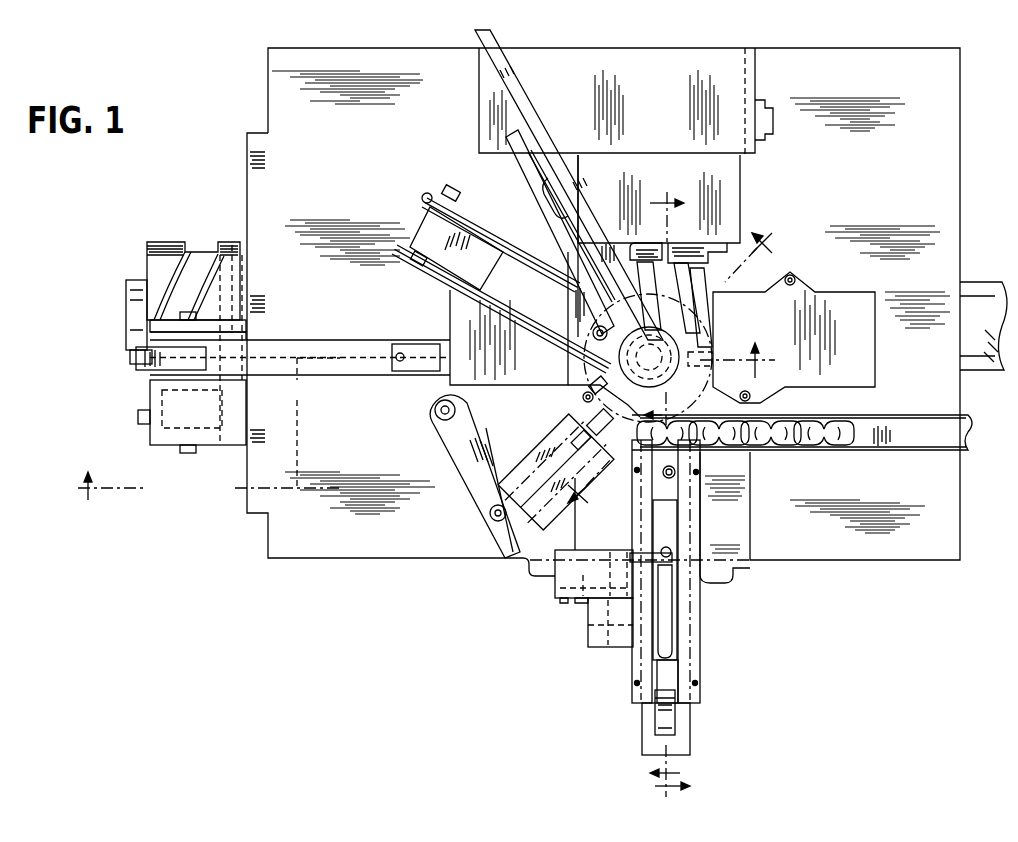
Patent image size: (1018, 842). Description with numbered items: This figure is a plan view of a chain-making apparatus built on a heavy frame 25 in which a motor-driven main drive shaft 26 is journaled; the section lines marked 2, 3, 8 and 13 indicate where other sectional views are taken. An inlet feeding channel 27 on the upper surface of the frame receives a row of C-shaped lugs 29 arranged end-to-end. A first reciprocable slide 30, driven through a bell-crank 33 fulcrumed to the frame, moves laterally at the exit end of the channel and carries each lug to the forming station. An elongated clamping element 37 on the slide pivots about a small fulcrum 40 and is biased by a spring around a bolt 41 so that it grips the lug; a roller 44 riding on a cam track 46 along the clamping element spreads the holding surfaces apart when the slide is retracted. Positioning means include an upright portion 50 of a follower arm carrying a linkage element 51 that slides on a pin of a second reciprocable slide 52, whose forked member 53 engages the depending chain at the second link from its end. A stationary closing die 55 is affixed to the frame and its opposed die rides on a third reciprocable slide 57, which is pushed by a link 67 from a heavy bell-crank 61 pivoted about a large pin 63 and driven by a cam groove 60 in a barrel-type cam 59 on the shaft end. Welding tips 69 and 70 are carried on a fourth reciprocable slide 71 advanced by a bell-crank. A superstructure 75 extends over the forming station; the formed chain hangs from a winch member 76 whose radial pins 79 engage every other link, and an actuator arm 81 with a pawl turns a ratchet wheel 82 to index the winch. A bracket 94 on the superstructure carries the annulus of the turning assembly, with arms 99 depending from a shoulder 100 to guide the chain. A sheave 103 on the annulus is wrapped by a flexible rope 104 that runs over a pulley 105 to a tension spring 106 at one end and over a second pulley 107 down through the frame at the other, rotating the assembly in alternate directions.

The frame 25 is at (338, 540).
The main drive shaft 26 is at (972, 300).
The inlet feeding channel 27 is at (876, 420).
The C-shaped lugs 29 is at (785, 448).
The first reciprocable slide 30 is at (690, 720).
The bell-crank 33 is at (656, 712).
The clamping element 37 is at (672, 542).
The fulcrum 40 is at (680, 510).
The bolt 41 is at (678, 472).
The roller 44 is at (704, 576).
The cam track 46 is at (672, 640).
The upright portion 50 is at (440, 421).
The linkage element 51 is at (478, 432).
The second reciprocable slide 52 is at (490, 520).
The forked member 53 is at (600, 426).
The closing die 55 is at (708, 336).
The third reciprocable slide 57 is at (437, 374).
The barrel-type cam 59 is at (152, 258).
The cam groove 60 is at (186, 254).
The heavy bell-crank 61 is at (130, 356).
The large pin 63 is at (190, 314).
The link 67 is at (316, 342).
The welding tip 69 is at (688, 296).
The welding tip 70 is at (670, 262).
The fourth reciprocable slide 71 is at (740, 175).
The superstructure 75 is at (586, 212).
The winch member 76 is at (588, 292).
The radial pins 79 is at (596, 328).
The actuator arm 81 is at (707, 298).
The ratchet wheel 82 is at (645, 250).
The bracket 94 is at (618, 355).
The arms 99 is at (583, 397).
The shoulder 100 is at (598, 380).
The sheave 103 is at (781, 337).
The flexible rope 104 is at (503, 246).
The pulley 105 is at (450, 198).
The tension spring 106 is at (423, 196).
The second pulley 107 is at (408, 262).
The section line 2 is at (675, 488).
The section line 3 is at (654, 585).
The section line 8 is at (426, 431).
The section line 13 is at (685, 369).